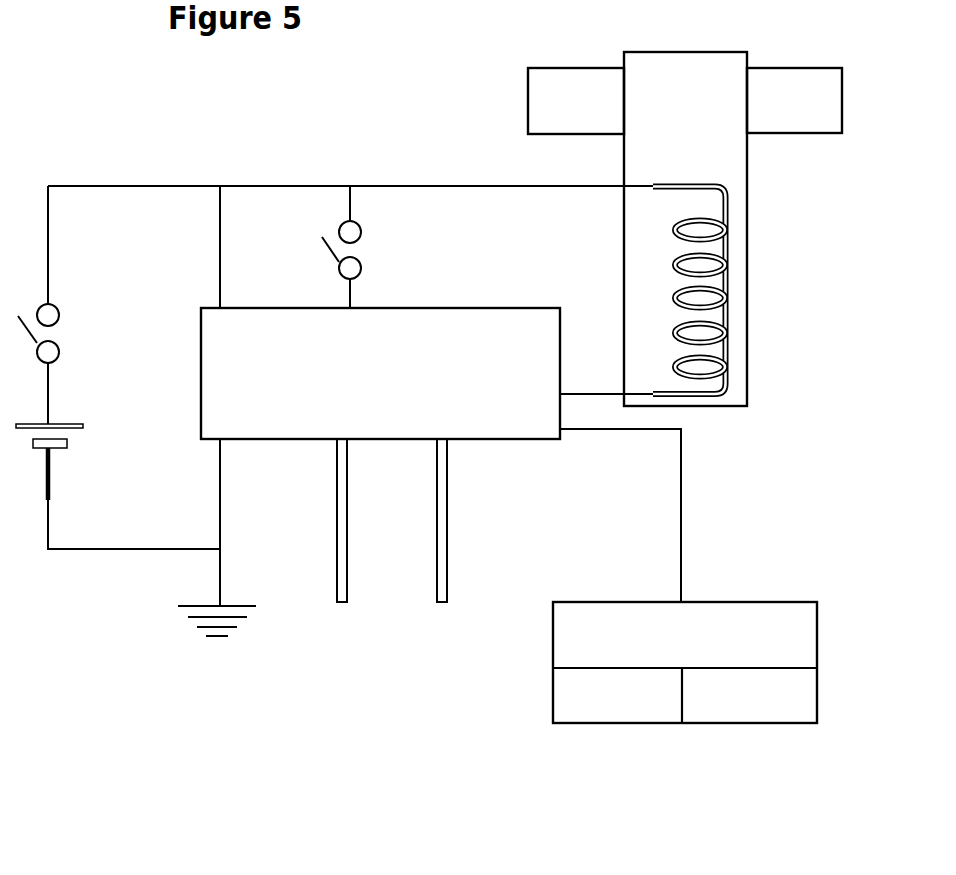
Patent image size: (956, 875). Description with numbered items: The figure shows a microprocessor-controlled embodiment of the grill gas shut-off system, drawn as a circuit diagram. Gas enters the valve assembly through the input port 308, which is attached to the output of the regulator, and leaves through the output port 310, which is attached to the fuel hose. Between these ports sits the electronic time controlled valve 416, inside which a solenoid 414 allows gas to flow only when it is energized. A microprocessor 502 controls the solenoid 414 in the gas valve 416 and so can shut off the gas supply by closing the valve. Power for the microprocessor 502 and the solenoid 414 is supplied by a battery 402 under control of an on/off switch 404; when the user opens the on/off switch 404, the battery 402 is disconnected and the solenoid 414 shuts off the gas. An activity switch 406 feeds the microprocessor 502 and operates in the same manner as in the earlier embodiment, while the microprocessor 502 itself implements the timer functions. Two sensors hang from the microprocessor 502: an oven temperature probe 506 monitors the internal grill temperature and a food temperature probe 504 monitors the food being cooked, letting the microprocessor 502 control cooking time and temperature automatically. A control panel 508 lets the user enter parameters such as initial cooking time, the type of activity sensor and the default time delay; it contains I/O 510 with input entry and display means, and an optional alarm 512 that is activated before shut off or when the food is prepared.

The input port 308 is at (555, 107).
The output port 310 is at (822, 107).
The electronic time controlled valve 416 is at (733, 154).
The solenoid 414 is at (715, 348).
The on/off switch 404 is at (59, 315).
The battery 402 is at (67, 443).
The activity switch 406 is at (358, 226).
The microprocessor 502 is at (488, 307).
The food temperature probe 504 is at (448, 522).
The oven temperature probe 506 is at (348, 522).
The control panel 508 is at (608, 602).
The I/O 510 is at (625, 723).
The alarm 512 is at (728, 723).